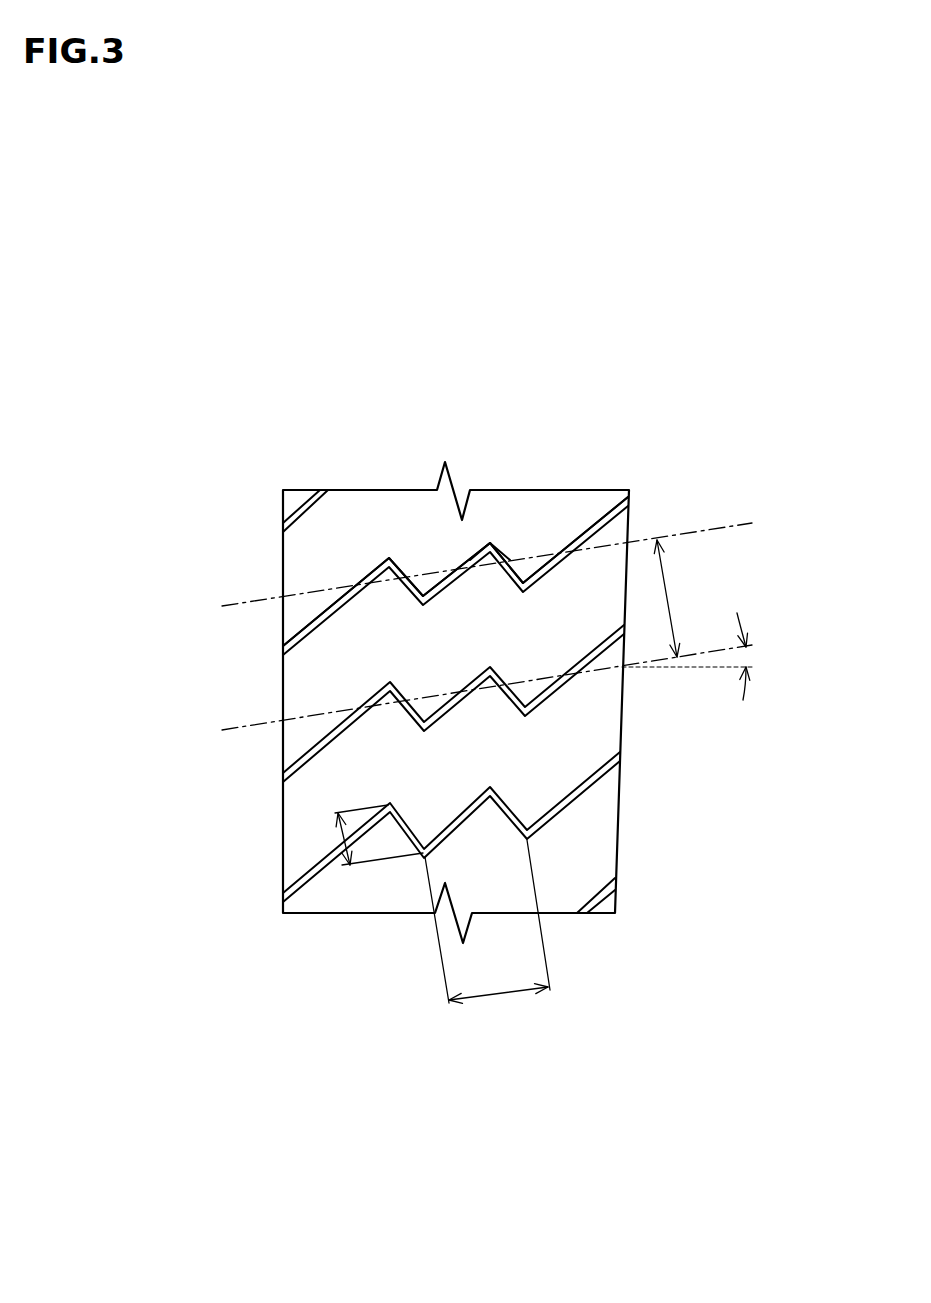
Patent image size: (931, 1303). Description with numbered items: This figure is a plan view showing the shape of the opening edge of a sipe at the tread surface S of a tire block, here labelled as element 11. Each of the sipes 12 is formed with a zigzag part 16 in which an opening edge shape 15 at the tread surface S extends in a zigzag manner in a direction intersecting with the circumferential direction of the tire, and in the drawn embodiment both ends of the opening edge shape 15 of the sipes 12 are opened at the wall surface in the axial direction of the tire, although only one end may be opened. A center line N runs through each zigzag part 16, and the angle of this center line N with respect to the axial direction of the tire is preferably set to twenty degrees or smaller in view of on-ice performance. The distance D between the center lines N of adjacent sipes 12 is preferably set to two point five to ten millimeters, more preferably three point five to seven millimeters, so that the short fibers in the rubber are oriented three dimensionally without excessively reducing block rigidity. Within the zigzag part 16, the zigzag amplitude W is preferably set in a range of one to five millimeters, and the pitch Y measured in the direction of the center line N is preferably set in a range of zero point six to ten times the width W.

The heat exchanger fin / sheet member 11 is at (429, 467).
The sipe 12 is at (593, 512).
The opening edge shape 15 is at (455, 571).
The zigzag part 16 is at (498, 535).
The tread surface S is at (373, 517).
The center line N is at (703, 530).
The distance D is at (667, 598).
The zigzag amplitude W is at (342, 839).
The pitch Y is at (500, 1000).